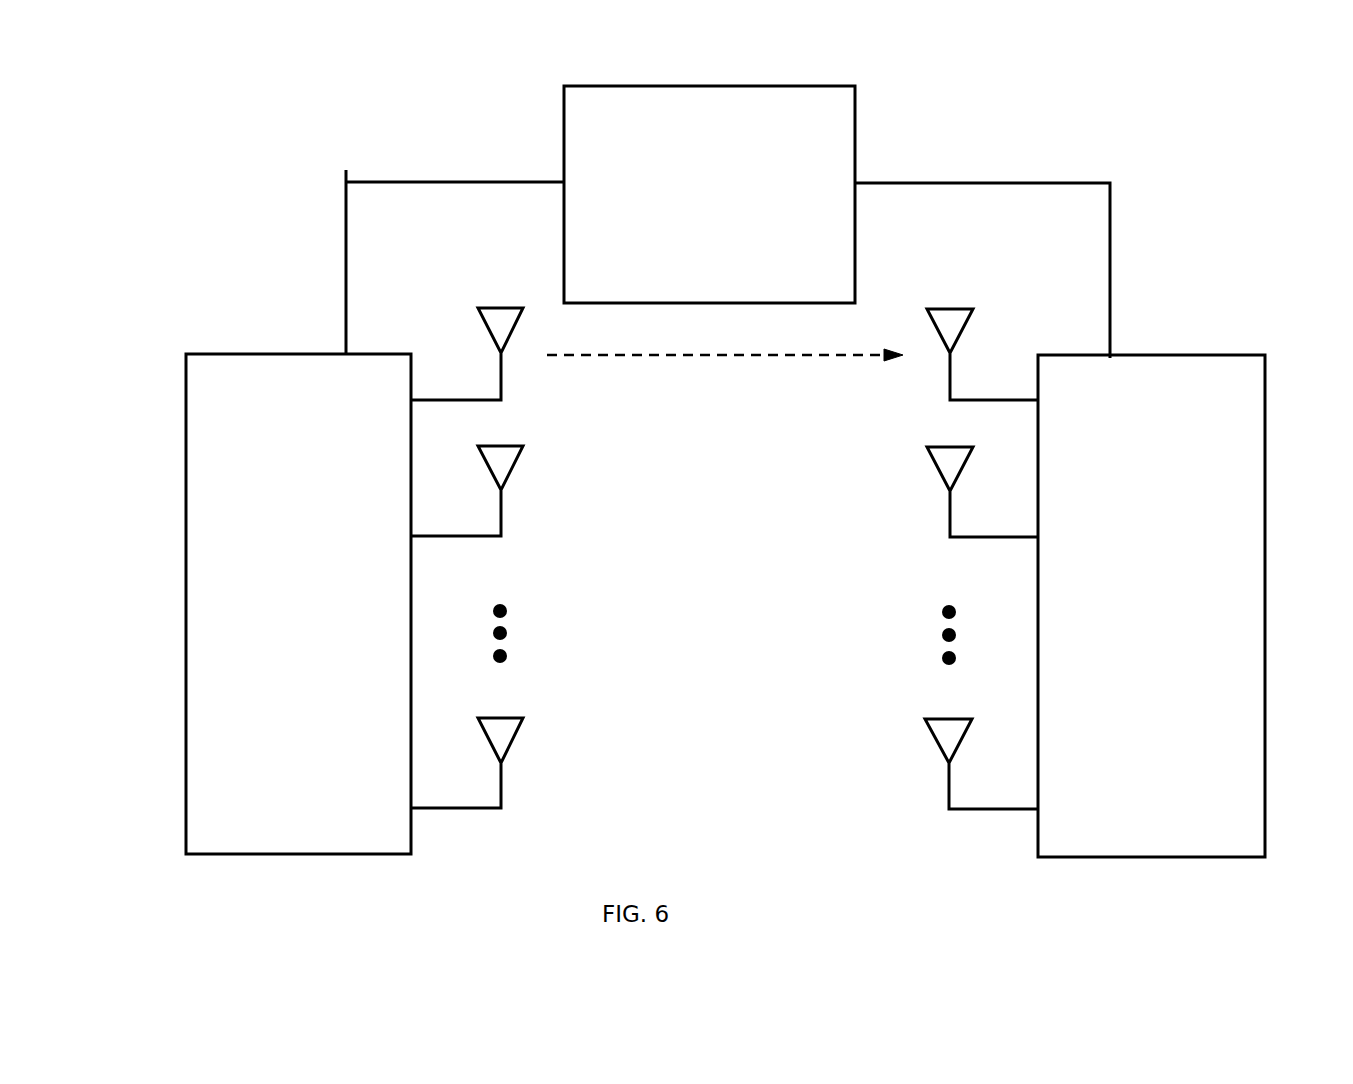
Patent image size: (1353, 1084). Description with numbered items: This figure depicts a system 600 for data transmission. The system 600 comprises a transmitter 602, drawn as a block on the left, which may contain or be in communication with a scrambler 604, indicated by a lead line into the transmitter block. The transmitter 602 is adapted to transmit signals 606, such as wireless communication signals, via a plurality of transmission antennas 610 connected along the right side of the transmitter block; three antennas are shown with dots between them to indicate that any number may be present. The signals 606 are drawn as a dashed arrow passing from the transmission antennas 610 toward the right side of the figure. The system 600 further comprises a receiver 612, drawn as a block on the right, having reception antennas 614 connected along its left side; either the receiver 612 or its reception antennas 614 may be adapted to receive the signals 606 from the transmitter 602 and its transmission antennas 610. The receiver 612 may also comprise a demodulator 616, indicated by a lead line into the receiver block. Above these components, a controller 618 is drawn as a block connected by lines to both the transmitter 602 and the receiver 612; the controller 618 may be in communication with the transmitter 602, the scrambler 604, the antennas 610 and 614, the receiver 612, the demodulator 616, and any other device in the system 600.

The system 600 is at (213, 241).
The transmitter 602 is at (258, 604).
The scrambler 604 is at (226, 795).
The signals 606 is at (725, 372).
The transmission antennas 610 is at (480, 558).
The receiver 612 is at (1175, 606).
The reception antennas 614 is at (954, 559).
The demodulator 616 is at (1210, 795).
The controller 618 is at (728, 222).